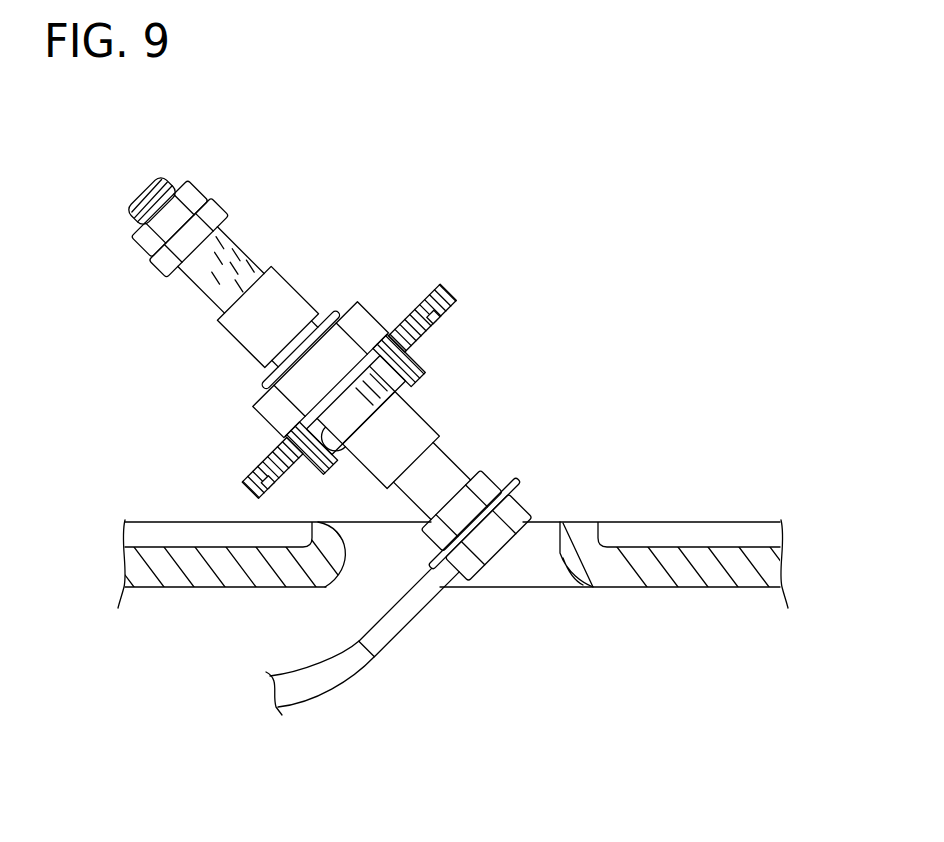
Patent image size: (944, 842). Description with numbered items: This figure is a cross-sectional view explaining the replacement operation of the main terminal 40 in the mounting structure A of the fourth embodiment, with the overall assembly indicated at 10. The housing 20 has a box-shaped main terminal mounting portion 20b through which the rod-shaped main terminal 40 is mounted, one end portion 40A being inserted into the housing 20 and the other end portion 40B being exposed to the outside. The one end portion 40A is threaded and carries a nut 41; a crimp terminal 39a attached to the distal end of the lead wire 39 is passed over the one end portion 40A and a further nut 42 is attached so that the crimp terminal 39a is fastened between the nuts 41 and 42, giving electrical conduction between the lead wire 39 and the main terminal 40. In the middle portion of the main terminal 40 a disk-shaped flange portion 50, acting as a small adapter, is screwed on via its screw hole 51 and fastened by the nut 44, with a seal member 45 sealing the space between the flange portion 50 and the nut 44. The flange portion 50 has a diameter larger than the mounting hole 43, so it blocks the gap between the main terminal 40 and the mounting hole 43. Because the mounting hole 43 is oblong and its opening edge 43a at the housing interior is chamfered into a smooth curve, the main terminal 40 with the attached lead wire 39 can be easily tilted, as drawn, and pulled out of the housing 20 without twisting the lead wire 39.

The vehicle body structure 10 is at (120, 506).
The housing 20 is at (458, 564).
The main terminal mounting portion 20b is at (747, 546).
The lead wire 39 is at (333, 695).
The crimp terminal 39a is at (408, 634).
The main terminal 40 is at (230, 333).
The one end portion 40A is at (519, 468).
The other end portion 40B is at (182, 166).
The nut 41 is at (494, 466).
The nut 42 is at (522, 512).
The mounting hole 43 is at (561, 553).
The opening edge 43a is at (347, 591).
The nut 44 is at (263, 423).
The seal member 45 is at (385, 345).
The flange portion 50 is at (243, 495).
The screw hole 51 is at (346, 440).
The mounting structure A is at (590, 416).